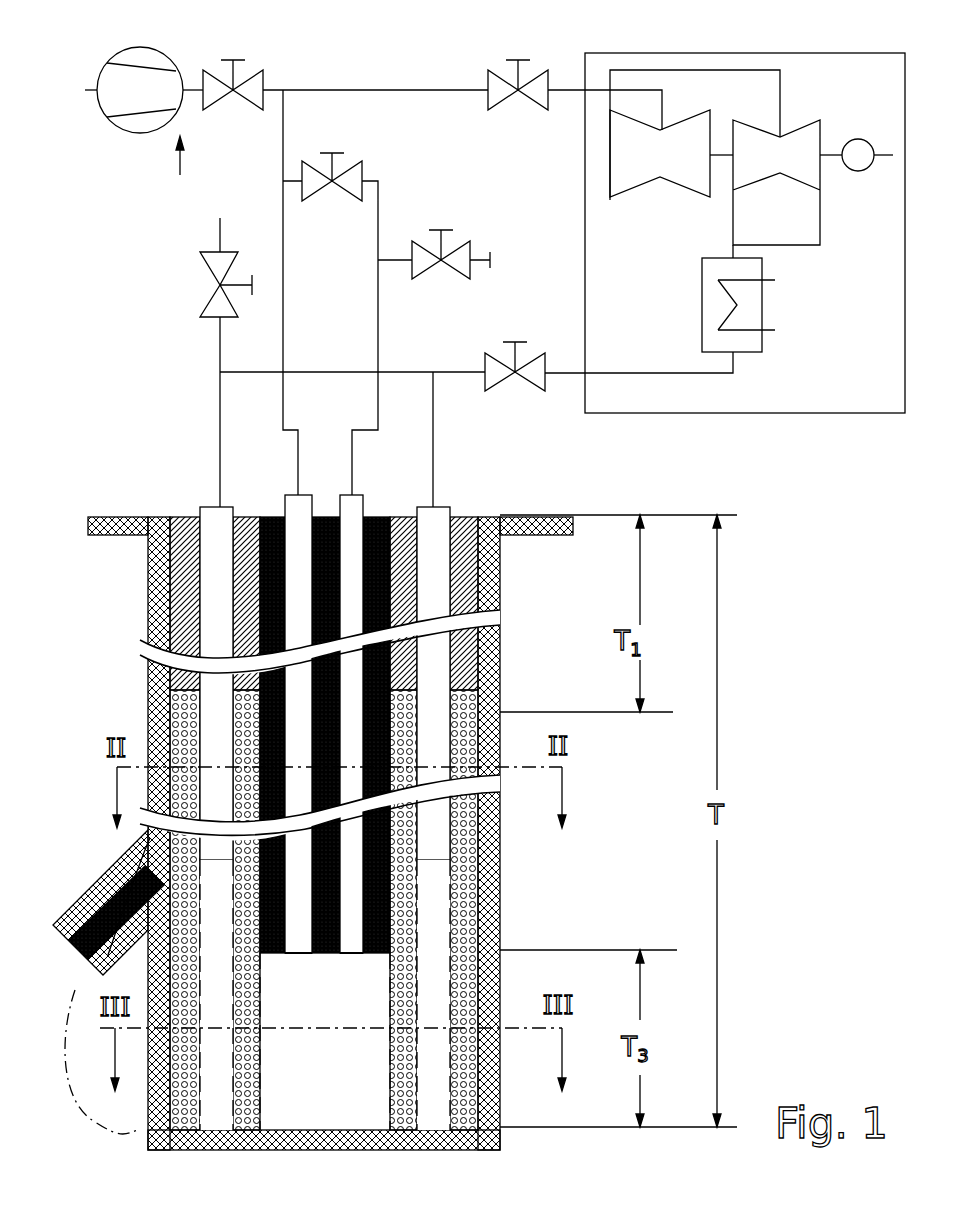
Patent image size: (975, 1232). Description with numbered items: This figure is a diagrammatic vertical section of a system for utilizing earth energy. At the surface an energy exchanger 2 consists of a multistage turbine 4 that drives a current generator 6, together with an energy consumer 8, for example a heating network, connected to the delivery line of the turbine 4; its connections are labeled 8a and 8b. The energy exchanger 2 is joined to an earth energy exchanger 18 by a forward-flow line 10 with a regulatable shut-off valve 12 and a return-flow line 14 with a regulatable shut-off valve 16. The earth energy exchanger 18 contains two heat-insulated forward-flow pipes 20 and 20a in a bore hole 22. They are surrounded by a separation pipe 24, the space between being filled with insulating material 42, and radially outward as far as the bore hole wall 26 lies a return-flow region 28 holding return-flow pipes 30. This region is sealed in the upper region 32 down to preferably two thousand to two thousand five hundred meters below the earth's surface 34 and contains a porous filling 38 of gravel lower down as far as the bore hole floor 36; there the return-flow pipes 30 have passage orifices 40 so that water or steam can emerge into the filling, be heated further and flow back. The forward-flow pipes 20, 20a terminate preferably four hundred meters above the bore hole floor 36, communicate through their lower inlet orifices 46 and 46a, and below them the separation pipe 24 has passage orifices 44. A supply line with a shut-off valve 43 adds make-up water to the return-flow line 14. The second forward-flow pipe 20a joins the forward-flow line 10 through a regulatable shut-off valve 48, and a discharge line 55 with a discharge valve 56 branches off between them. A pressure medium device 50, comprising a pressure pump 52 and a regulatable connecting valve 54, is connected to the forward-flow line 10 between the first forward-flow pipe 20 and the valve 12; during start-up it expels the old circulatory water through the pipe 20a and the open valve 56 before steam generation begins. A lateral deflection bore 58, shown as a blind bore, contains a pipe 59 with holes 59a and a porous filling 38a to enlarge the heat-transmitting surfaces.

The energy exchanger 2 is at (728, 53).
The multistage turbine 4 is at (686, 227).
The current generator 6 is at (860, 139).
The energy consumer 8 is at (705, 313).
The heat exchanger inlet 8a is at (775, 280).
The heat exchanger outlet 8b is at (765, 330).
The forward-flow line 10 is at (430, 88).
The regulatable shut-off valve 12 is at (505, 108).
The return-flow line 14 is at (413, 372).
The regulatable shut-off valve 16 is at (497, 350).
The earth energy exchanger 18 is at (129, 430).
The forward-flow pipe 20 is at (298, 505).
The second forward-flow pipe 20a is at (350, 492).
The bore hole 22 is at (142, 613).
The separation pipe 24 is at (262, 515).
The bore hole wall 26 is at (500, 590).
The return-flow region 28 is at (460, 1142).
The return-flow pipes 30 is at (218, 520).
The upper region 32 is at (500, 670).
The earth's surface 34 is at (540, 515).
The bore hole floor 36 is at (305, 1150).
The porous filling 38 is at (500, 865).
The porous filling 38a is at (112, 878).
The passage orifices 40 is at (500, 903).
The insulating material 42 is at (378, 505).
The shut-off valve 43 is at (218, 305).
The passage orifices 44 is at (217, 242).
The lower inlet orifice 46 is at (297, 955).
The lower inlet orifice 46a is at (350, 955).
The regulatable shut-off valve 48 is at (310, 160).
The pressure medium device 50 is at (171, 172).
The pressure pump 52 is at (135, 47).
The regulatable connecting valve 54 is at (215, 68).
The discharge line 55 is at (489, 256).
The discharge valve 56 is at (422, 243).
The lateral deflection bore 58 is at (71, 782).
The pipe 59 is at (133, 862).
The holes 59a is at (120, 862).